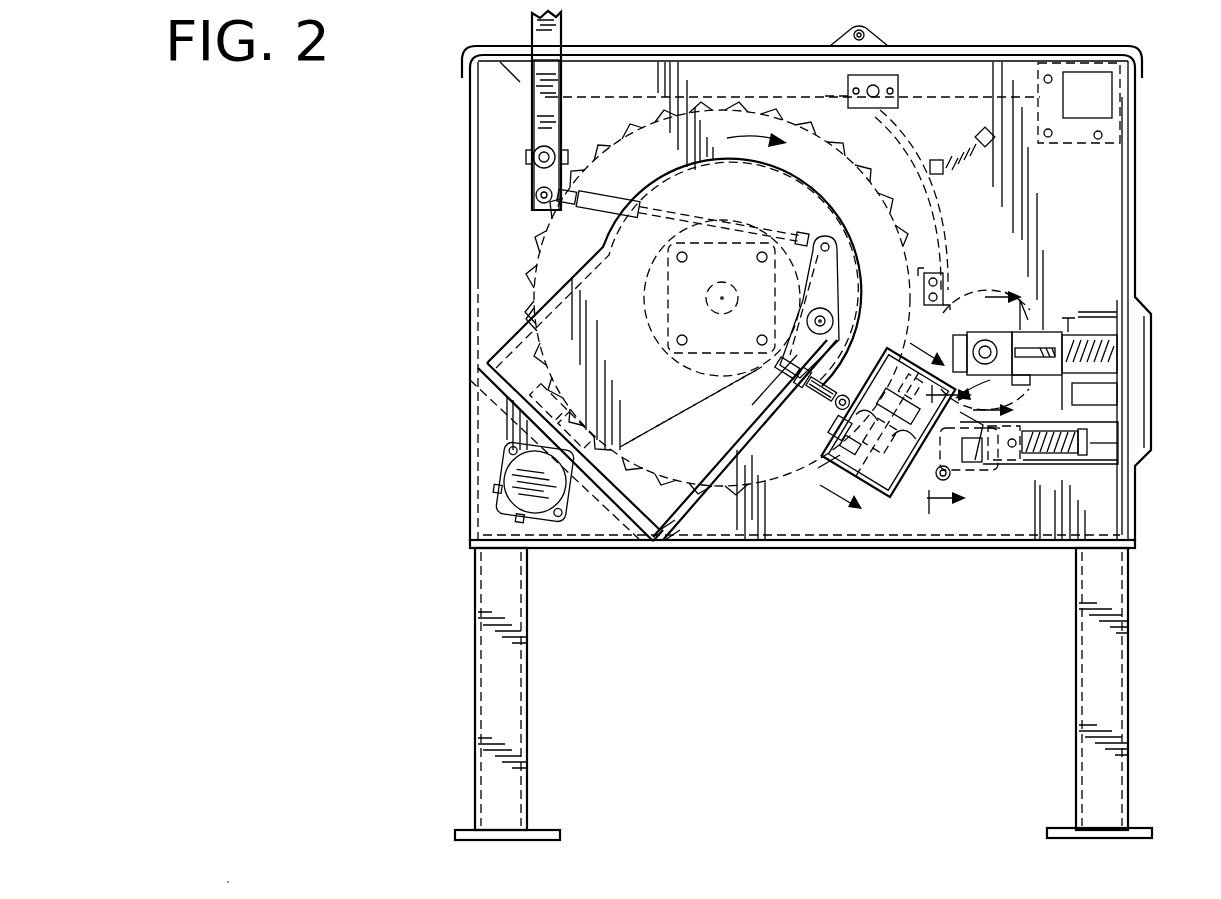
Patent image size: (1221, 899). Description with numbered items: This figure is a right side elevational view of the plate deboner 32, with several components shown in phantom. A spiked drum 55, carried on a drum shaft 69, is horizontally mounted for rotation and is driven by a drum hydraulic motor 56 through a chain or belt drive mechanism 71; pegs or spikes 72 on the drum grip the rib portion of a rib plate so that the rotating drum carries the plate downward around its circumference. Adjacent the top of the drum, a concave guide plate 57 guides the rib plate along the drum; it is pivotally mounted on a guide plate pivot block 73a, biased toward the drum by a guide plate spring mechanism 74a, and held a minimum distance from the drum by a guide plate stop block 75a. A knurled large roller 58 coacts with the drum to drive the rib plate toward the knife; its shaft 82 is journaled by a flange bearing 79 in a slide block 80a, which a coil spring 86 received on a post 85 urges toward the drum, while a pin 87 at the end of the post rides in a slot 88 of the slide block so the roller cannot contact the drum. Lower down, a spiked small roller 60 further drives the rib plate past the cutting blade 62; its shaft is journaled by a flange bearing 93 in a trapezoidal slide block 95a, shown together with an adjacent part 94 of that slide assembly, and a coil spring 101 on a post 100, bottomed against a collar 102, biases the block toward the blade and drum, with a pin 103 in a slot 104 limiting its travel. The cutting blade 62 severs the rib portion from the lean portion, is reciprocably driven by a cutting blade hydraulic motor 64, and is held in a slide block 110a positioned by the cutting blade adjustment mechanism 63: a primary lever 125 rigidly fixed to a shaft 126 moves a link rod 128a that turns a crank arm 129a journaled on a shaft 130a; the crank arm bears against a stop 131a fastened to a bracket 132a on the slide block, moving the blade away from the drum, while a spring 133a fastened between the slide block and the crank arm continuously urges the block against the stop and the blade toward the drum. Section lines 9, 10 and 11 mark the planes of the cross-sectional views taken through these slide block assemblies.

The plate deboner 32 is at (368, 322).
The spiked drum 55 is at (625, 135).
The drum hydraulic motor 56 is at (513, 490).
The guide plate 57 is at (905, 140).
The knurled large roller 58 is at (1022, 300).
The spiked small roller 60 is at (933, 480).
The cutting blade 62 is at (885, 487).
The cutting blade adjustment mechanism 63 is at (532, 110).
The cutting blade hydraulic motor 64 is at (977, 483).
The drum shaft 69 is at (733, 310).
The chain or belt drive mechanism 71 is at (613, 317).
The pegs or spikes 72 is at (528, 270).
The guide plate pivot block 73a is at (900, 82).
The guide plate spring mechanism 74a is at (985, 130).
The guide plate stop block 75a is at (948, 290).
The rotation direction 79 is at (999, 397).
The slide block 80a is at (1070, 318).
The shaft 82 is at (990, 348).
The post 85 is at (1145, 302).
The coil spring 86 is at (1105, 357).
The pin 87 is at (1045, 340).
The slot 88 is at (1035, 372).
The flange bearing 93 is at (977, 458).
The roller 94 is at (950, 450).
The slide block 95a is at (985, 452).
The post 100 is at (1095, 437).
The coil spring 101 is at (1100, 455).
The collar 102 is at (1062, 424).
The pin 103 is at (1064, 445).
The slot 104 is at (1000, 428).
The slide block 110a is at (822, 462).
The primary lever 125 is at (540, 37).
The shaft 126 is at (530, 160).
The link rod 128a is at (613, 205).
The crank arm 129a is at (840, 292).
The shaft 130a is at (826, 322).
The stop 131a is at (822, 405).
The bracket 132a is at (826, 436).
The spring 133a is at (693, 405).
The section line 9- 9 is at (882, 425).
The section line 10- 10 is at (937, 450).
The section line 11- 11 is at (997, 344).